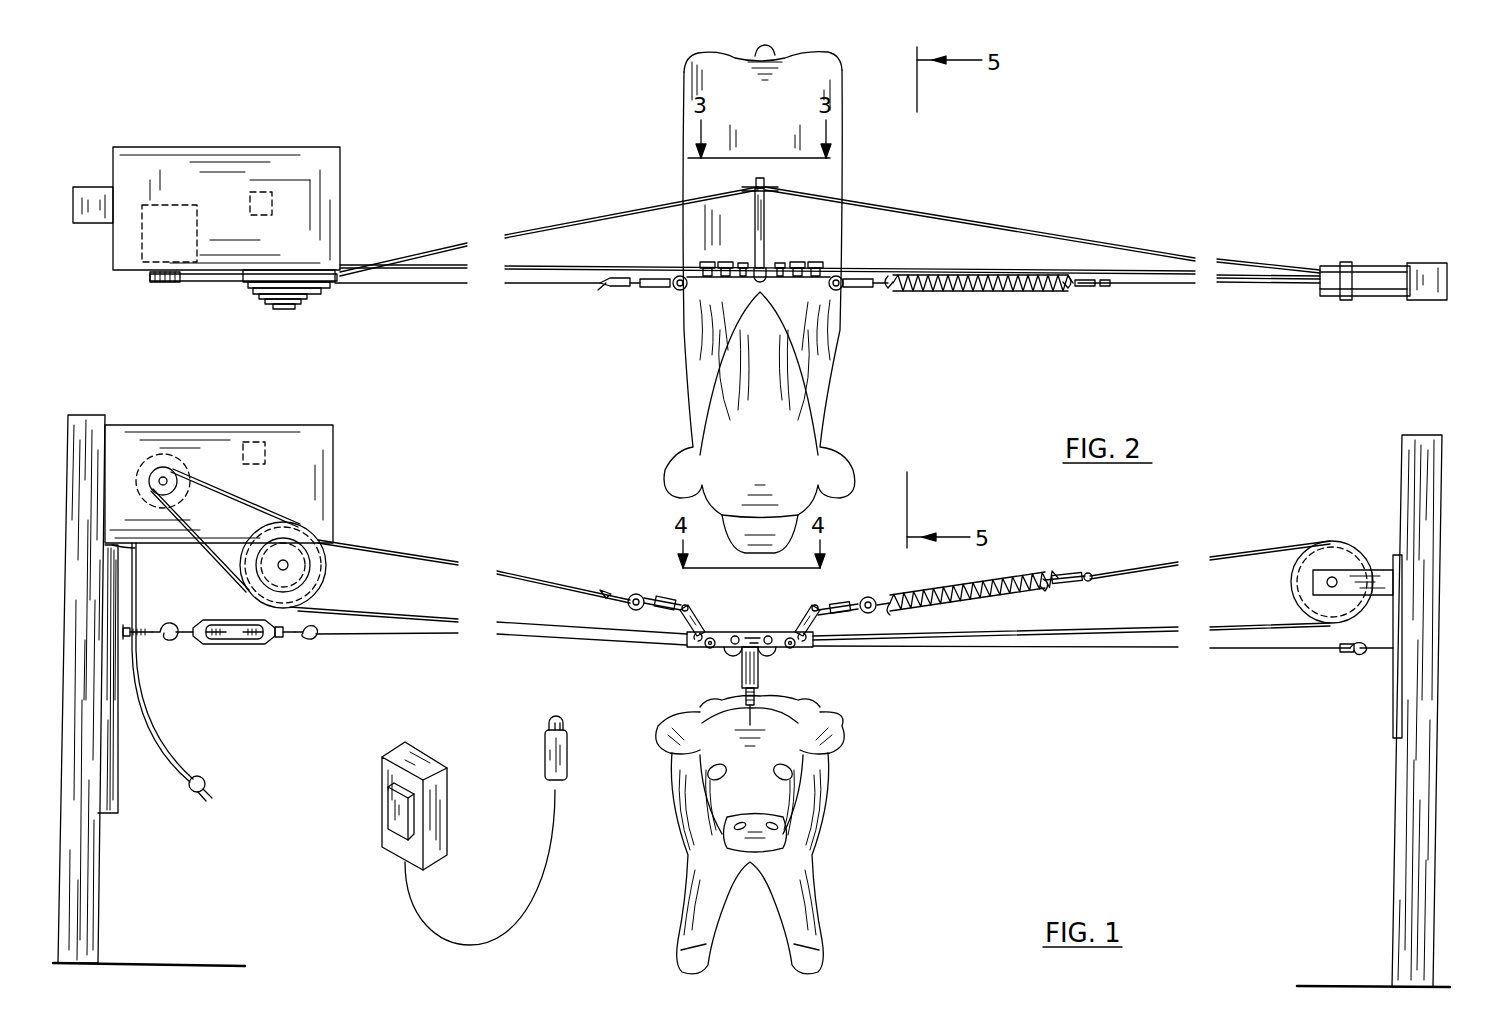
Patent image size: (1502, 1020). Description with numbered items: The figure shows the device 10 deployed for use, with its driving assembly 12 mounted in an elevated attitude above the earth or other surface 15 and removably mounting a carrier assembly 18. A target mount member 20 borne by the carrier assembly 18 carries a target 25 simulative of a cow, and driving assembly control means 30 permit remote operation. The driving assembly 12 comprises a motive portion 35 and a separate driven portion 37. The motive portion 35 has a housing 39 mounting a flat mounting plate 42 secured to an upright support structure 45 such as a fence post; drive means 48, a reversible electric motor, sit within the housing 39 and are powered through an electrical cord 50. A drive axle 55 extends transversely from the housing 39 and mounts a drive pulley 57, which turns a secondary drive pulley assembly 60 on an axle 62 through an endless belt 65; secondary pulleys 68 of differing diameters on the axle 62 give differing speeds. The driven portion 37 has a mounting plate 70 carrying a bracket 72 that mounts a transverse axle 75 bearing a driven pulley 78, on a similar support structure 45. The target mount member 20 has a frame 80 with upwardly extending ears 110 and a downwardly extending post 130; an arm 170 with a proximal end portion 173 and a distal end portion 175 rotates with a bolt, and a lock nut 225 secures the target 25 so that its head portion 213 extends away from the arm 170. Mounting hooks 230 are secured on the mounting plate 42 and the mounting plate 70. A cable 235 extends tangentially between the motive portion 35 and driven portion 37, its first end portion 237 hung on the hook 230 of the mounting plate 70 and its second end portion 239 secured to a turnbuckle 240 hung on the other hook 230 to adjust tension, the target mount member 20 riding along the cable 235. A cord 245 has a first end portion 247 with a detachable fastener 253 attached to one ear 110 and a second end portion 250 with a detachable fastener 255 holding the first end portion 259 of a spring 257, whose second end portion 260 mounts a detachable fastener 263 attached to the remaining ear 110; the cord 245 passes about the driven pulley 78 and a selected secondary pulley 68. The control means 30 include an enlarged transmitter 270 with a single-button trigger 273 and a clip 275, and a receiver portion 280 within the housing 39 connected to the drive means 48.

In FIG. 1, the device 10 is at (1002, 735).
In FIG. 2, the device 10 is at (1108, 191).
In FIG. 2, the driving assembly 12 is at (226, 184).
In FIG. 1, the earth or other surface 15 is at (1348, 983).
In FIG. 2, the carrier assembly 18 is at (962, 200).
In FIG. 1, the target mount member 20 is at (767, 649).
In FIG. 2, the target mount member 20 is at (745, 225).
In FIG. 1, the target 25 is at (778, 835).
In FIG. 2, the target 25 is at (795, 299).
In FIG. 1, the driving assembly control means 30 is at (426, 802).
In FIG. 1, the motive portion 35 is at (300, 430).
In FIG. 2, the motive portion 35 is at (150, 160).
In FIG. 1, the driven portion 37 is at (1320, 548).
In FIG. 1, the housing 39 is at (170, 423).
In FIG. 1, the mounting plate 42 is at (118, 565).
In FIG. 1, the support structure 45 is at (88, 418).
In FIG. 2, the support structure 45 is at (95, 195).
In FIG. 1, the drive means 48 is at (185, 452).
In FIG. 2, the drive means 48 is at (147, 255).
In FIG. 1, the electrical cord 50 is at (140, 680).
In FIG. 1, the drive axle 55 is at (180, 493).
In FIG. 1, the drive pulley 57 is at (166, 477).
In FIG. 1, the secondary drive pulley assembly 60 is at (305, 545).
In FIG. 2, the secondary drive pulley assembly 60 is at (319, 304).
In FIG. 1, the axle 62 is at (290, 565).
In FIG. 1, the endless belt 65 is at (245, 500).
In FIG. 2, the endless belt 65 is at (218, 283).
In FIG. 2, the secondary pulleys 68 is at (333, 289).
In FIG. 1, the mounting plate 70 is at (1385, 715).
In FIG. 1, the bracket 72 is at (1340, 596).
In FIG. 2, the bracket 72 is at (1370, 266).
In FIG. 1, the transverse axle 75 is at (1326, 582).
In FIG. 1, the driven pulley 78 is at (1332, 560).
In FIG. 1, the frame 80 is at (772, 632).
In FIG. 1, the ears 110 is at (690, 615).
In FIG. 1, the post 130 is at (741, 672).
In FIG. 2, the arm 170 is at (766, 217).
In FIG. 2, the proximal end portion 173 is at (735, 219).
In FIG. 2, the distal end portion 175 is at (768, 182).
In FIG. 1, the head portion 213 is at (790, 775).
In FIG. 2, the head portion 213 is at (790, 380).
In FIG. 1, the lock nut 225 is at (758, 700).
In FIG. 1, the mounting hooks 230 is at (150, 628).
In FIG. 1, the cable 235 is at (1100, 646).
In FIG. 2, the cable 235 is at (570, 266).
In FIG. 1, the first end portion 237 is at (1340, 652).
In FIG. 1, the second end portion 239 is at (322, 640).
In FIG. 1, the turnbuckle 240 is at (758, 636).
In FIG. 1, the cord 245 is at (378, 548).
In FIG. 2, the cord 245 is at (440, 248).
In FIG. 1, the first end portion 247 is at (612, 595).
In FIG. 2, the first end portion 247 is at (612, 290).
In FIG. 1, the second end portion 250 is at (1095, 580).
In FIG. 2, the second end portion 250 is at (1115, 285).
In FIG. 1, the detachable fastener 253 is at (650, 610).
In FIG. 2, the detachable fastener 253 is at (657, 290).
In FIG. 1, the detachable fastener 255 is at (1065, 575).
In FIG. 2, the detachable fastener 255 is at (1082, 290).
In FIG. 1, the spring 257 is at (968, 584).
In FIG. 2, the spring 257 is at (979, 279).
In FIG. 1, the first end portion 259 is at (1045, 576).
In FIG. 2, the first end portion 259 is at (1072, 280).
In FIG. 1, the second end portion 260 is at (893, 598).
In FIG. 2, the second end portion 260 is at (893, 291).
In FIG. 1, the detachable fastener 263 is at (848, 604).
In FIG. 2, the detachable fastener 263 is at (856, 284).
In FIG. 1, the transmitter 270 is at (420, 760).
In FIG. 1, the trigger 273 is at (567, 760).
In FIG. 1, the clip 275 is at (390, 812).
In FIG. 1, the receiver portion 280 is at (268, 450).
In FIG. 2, the receiver portion 280 is at (272, 198).